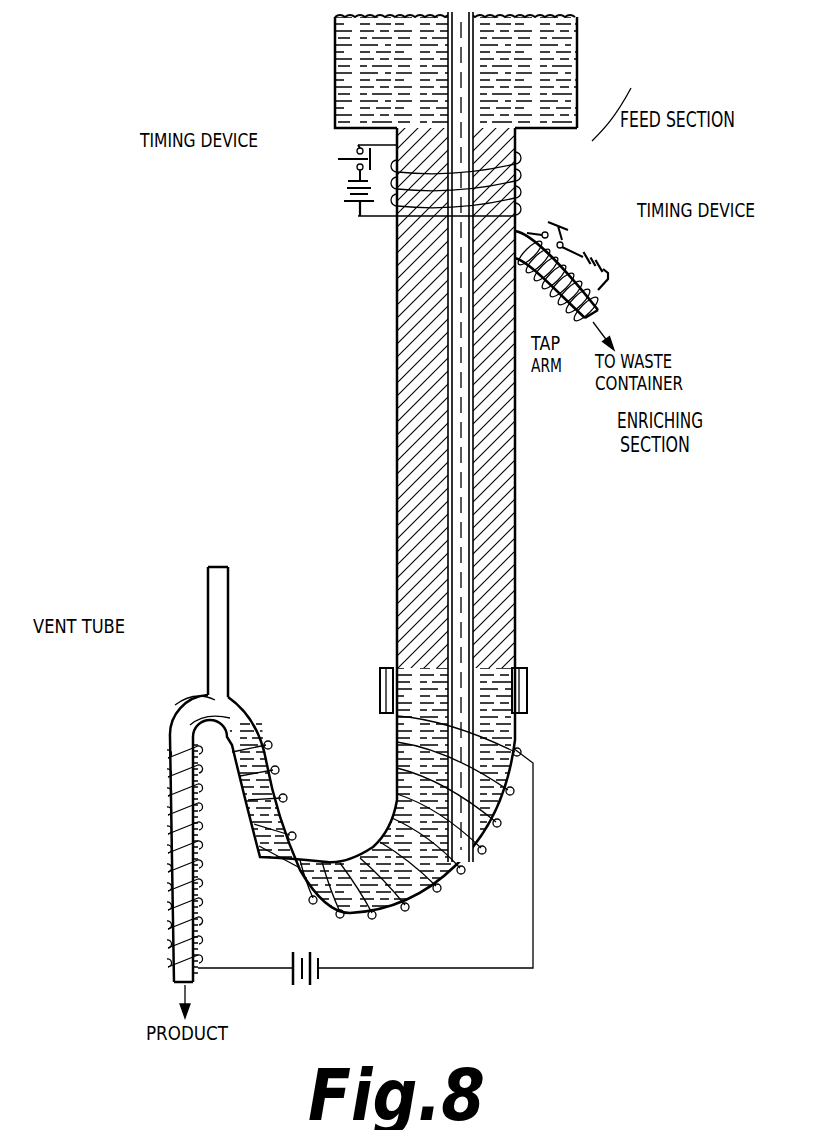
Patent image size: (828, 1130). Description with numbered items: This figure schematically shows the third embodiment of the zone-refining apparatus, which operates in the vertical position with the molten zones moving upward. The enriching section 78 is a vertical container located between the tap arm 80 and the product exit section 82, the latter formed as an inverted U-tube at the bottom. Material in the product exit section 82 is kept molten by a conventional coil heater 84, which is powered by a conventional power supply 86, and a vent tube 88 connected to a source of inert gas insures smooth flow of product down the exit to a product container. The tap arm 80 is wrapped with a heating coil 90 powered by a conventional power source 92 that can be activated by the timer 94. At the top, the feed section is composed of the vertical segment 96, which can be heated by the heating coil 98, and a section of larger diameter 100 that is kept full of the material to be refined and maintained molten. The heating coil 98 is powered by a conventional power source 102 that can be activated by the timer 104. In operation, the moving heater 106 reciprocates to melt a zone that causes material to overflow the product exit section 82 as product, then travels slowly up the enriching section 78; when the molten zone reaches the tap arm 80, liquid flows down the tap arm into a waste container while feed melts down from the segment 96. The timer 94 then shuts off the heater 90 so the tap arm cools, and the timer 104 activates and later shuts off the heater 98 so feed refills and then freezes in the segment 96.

The enriching section 78 is at (515, 432).
The tap arm 80 is at (523, 262).
The product exit section 82 is at (316, 870).
The coil heater 84 is at (533, 855).
The power supply 86 is at (320, 982).
The vent tube 88 is at (208, 632).
The heating coil 90 is at (612, 282).
The power source 92 is at (607, 258).
The timer 94 is at (562, 228).
The feed section segment 96 is at (515, 131).
The heating coil 98 is at (366, 221).
The section of larger diameter 100 is at (578, 77).
The power source 102 is at (345, 205).
The timer 104 is at (338, 159).
The moving heater 106 is at (527, 690).